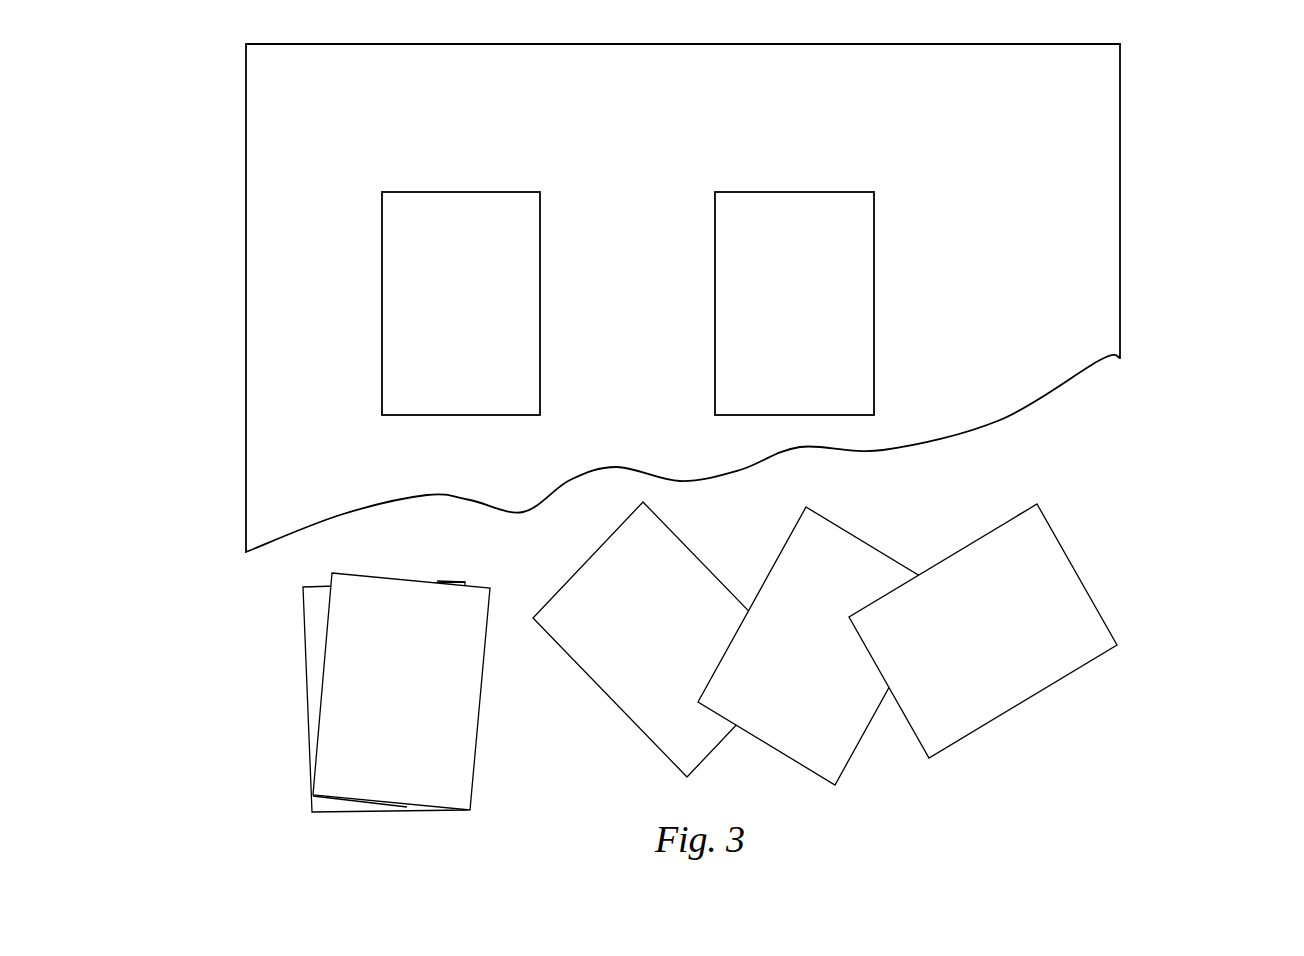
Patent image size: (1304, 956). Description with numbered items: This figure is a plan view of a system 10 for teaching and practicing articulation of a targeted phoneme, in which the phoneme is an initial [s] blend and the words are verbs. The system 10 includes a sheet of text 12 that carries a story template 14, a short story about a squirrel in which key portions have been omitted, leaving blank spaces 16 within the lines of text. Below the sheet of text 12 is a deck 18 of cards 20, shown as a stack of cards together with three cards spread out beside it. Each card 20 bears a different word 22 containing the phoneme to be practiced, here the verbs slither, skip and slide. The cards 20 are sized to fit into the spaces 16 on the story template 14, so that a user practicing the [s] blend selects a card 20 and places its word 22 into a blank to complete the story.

The system for teaching and practicing articulation of a targeted phoneme 10 is at (745, 428).
The sheet of text 12 is at (730, 298).
The story template 14 is at (772, 103).
The spaces 16 is at (541, 231).
The deck 18 is at (318, 705).
The cards 20 is at (717, 624).
The words 22 is at (644, 623).